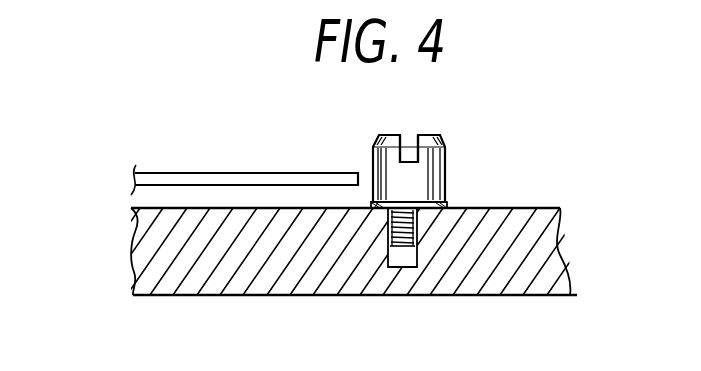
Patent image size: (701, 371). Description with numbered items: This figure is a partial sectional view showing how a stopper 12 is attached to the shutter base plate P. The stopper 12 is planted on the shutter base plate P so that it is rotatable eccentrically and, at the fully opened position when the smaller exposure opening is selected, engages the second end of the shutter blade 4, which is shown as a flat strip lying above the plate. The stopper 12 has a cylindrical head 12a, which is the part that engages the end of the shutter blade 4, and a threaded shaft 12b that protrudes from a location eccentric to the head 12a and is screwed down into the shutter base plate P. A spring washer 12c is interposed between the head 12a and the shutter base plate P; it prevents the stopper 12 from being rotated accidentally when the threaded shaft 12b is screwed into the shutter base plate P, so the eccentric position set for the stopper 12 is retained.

The shutter blade 4 is at (224, 178).
The stopper 12 is at (496, 229).
The cylindrical head 12a is at (446, 173).
The threaded shaft 12b is at (418, 226).
The spring washer 12c is at (447, 197).
The shutter base plate P is at (527, 279).